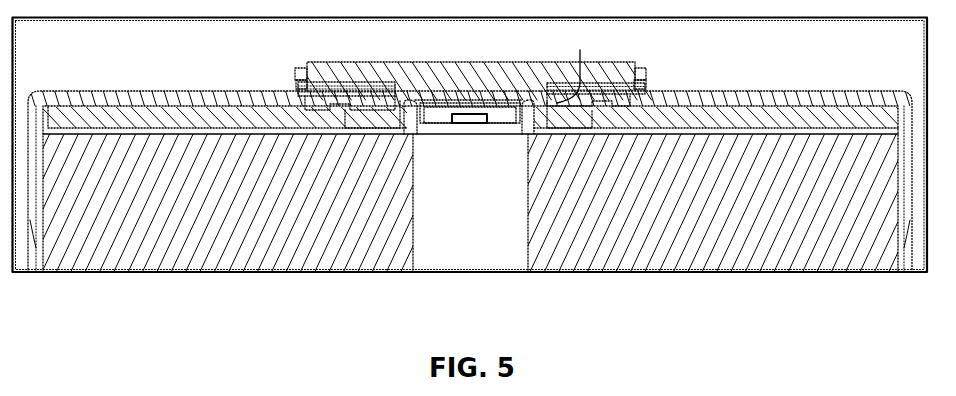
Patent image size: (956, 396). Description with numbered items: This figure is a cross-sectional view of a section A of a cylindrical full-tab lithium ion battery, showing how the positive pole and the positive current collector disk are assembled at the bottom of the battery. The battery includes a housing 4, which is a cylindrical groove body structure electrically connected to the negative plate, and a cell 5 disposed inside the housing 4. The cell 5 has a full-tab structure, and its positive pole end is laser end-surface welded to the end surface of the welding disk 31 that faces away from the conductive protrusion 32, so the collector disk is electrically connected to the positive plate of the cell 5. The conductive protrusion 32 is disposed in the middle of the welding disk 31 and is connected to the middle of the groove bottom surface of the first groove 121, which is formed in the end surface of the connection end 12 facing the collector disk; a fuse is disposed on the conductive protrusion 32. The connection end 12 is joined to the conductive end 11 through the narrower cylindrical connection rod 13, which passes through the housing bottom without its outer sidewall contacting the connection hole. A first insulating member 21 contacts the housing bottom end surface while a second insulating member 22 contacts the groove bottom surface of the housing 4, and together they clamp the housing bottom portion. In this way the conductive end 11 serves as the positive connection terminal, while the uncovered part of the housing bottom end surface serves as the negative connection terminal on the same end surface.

The housing 4 is at (810, 97).
The cell 5 is at (97, 148).
The conductive end 11 is at (612, 72).
The connection end 12 is at (373, 120).
The first groove 121 is at (413, 107).
The connection rod 13 is at (515, 92).
The first insulating member 21 is at (300, 78).
The second insulating member 22 is at (192, 118).
The welding disk 31 is at (718, 128).
The conductive protrusion 32 is at (457, 100).
The section A is at (332, 273).